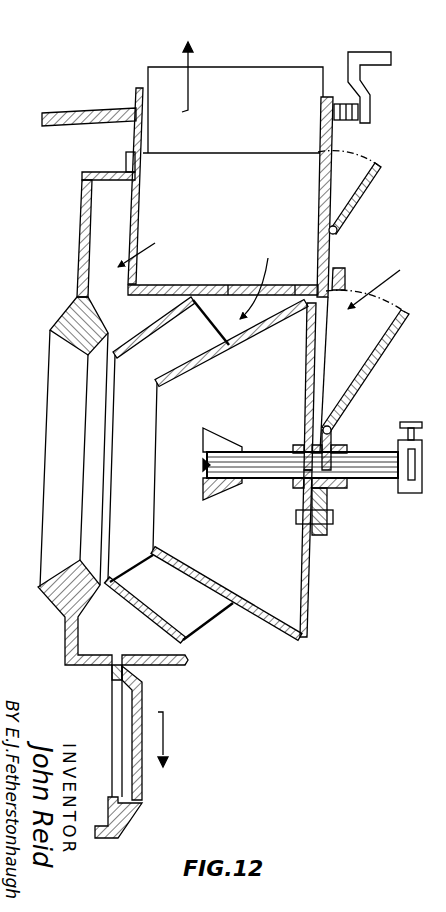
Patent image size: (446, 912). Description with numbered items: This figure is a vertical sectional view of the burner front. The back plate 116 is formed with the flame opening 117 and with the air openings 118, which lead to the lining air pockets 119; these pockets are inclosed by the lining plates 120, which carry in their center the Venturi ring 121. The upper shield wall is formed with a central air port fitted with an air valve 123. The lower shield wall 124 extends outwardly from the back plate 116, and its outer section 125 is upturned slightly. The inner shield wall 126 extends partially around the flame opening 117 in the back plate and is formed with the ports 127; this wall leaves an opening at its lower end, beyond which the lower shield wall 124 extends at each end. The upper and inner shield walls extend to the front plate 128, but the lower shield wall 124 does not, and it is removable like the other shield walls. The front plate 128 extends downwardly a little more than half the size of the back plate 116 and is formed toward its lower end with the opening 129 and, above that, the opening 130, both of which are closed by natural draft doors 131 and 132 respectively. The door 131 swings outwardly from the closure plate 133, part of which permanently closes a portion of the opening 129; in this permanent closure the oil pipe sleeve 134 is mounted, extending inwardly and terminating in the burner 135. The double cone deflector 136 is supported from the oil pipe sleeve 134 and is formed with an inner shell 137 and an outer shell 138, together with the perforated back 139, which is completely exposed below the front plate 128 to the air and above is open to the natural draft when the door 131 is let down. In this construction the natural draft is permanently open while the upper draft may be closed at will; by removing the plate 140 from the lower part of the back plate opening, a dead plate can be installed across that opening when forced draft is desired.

The back plate 116 is at (143, 202).
The flame opening 117 is at (208, 441).
The air openings 118 is at (137, 266).
The lining air pockets 119 is at (106, 234).
The lining plates 120 is at (78, 251).
The Venturi ring 121 is at (65, 343).
The air valve 123 is at (255, 148).
The lower shield wall 124 is at (87, 668).
The outer section of lower shield wall 125 is at (193, 658).
The inner shield wall 126 is at (198, 287).
The ports 127 is at (272, 288).
The front plate 128 is at (334, 254).
The lower opening 129 is at (318, 364).
The upper opening 130 is at (323, 182).
The natural draft door 131 is at (374, 368).
The natural draft door 132 is at (360, 203).
The closure plate 133 is at (336, 440).
The oil pipe sleeve 134 is at (270, 476).
The burner 135 is at (204, 462).
The double cone deflector 136 is at (156, 384).
The inner shell 137 is at (238, 598).
The outer shell 138 is at (141, 602).
The perforated back 139 is at (309, 574).
The plate 140 is at (143, 708).